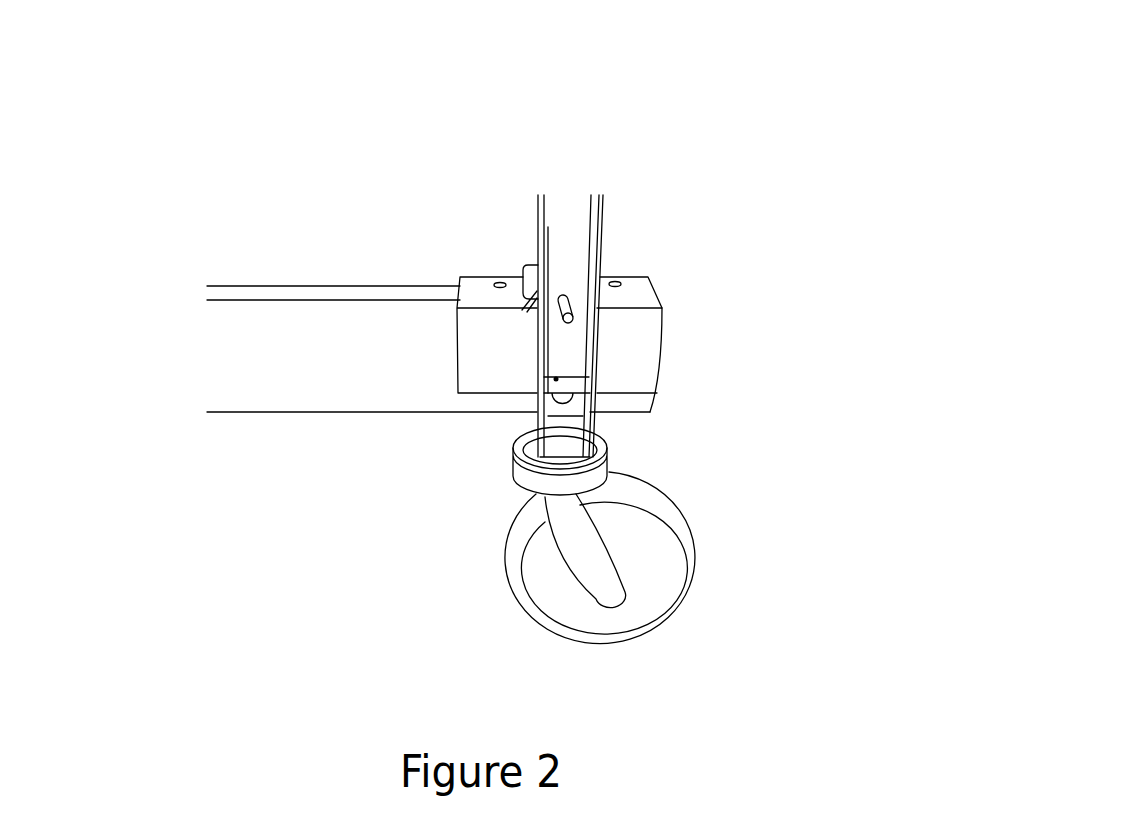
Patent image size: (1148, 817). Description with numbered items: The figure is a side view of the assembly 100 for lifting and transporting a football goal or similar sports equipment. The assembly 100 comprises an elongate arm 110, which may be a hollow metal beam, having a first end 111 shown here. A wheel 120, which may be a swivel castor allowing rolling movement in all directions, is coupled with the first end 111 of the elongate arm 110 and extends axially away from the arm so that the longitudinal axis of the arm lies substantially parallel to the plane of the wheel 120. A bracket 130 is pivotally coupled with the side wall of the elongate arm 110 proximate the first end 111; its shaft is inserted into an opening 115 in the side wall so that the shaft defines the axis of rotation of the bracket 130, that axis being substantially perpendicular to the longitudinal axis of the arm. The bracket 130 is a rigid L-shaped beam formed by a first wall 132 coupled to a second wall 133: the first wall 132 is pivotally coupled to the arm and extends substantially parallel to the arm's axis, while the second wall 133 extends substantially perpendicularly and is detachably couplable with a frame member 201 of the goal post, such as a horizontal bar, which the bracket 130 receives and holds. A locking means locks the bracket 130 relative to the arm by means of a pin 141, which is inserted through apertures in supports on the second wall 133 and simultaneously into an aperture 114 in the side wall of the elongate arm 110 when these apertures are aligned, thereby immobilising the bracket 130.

The assembly 100 is at (633, 101).
The elongate arm 110 is at (614, 199).
The first end 111 is at (587, 448).
The aperture 114 is at (565, 296).
The opening 115 is at (558, 379).
The wheel 120 is at (716, 562).
The bracket 130 is at (514, 259).
The first wall 132 is at (660, 356).
The second wall 133 is at (647, 295).
The pin 141 is at (573, 318).
The frame member 201 is at (288, 302).